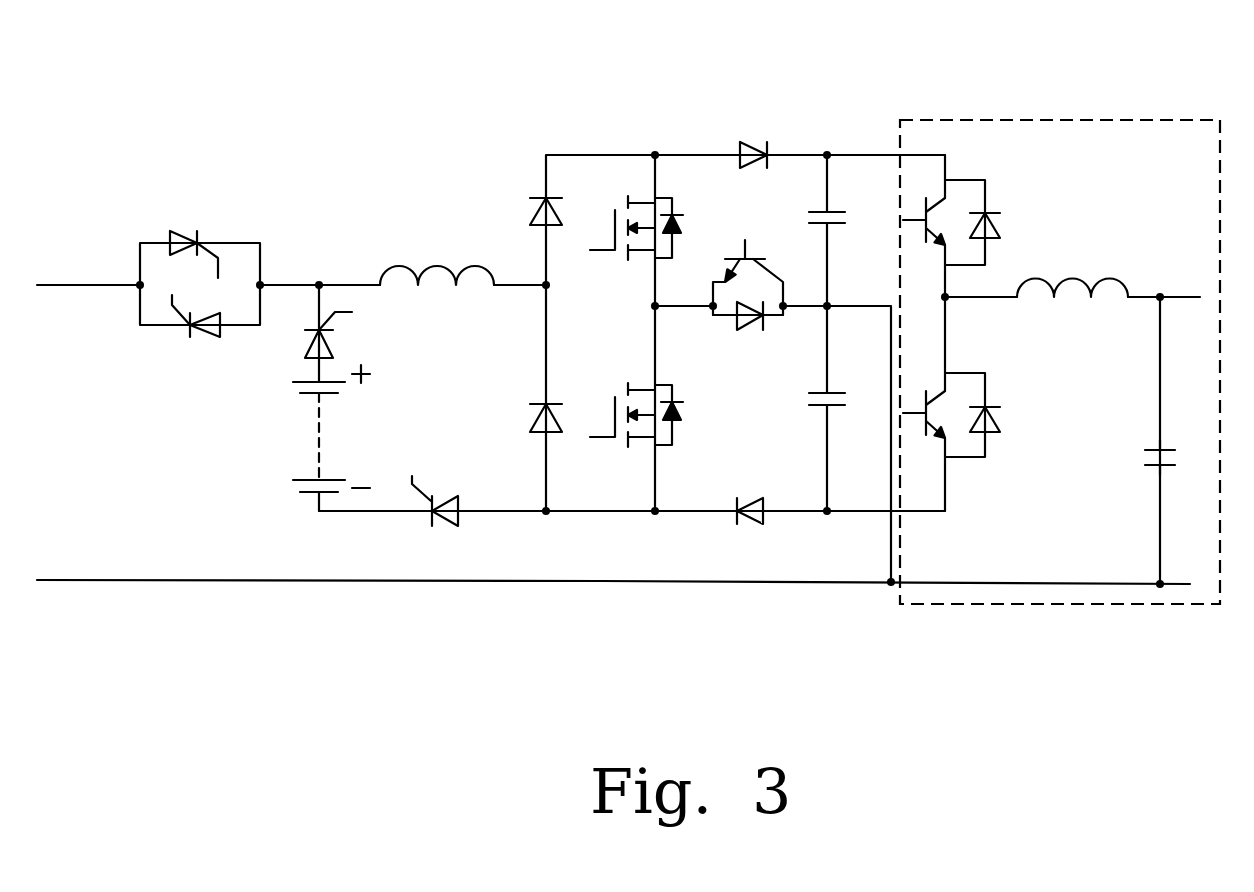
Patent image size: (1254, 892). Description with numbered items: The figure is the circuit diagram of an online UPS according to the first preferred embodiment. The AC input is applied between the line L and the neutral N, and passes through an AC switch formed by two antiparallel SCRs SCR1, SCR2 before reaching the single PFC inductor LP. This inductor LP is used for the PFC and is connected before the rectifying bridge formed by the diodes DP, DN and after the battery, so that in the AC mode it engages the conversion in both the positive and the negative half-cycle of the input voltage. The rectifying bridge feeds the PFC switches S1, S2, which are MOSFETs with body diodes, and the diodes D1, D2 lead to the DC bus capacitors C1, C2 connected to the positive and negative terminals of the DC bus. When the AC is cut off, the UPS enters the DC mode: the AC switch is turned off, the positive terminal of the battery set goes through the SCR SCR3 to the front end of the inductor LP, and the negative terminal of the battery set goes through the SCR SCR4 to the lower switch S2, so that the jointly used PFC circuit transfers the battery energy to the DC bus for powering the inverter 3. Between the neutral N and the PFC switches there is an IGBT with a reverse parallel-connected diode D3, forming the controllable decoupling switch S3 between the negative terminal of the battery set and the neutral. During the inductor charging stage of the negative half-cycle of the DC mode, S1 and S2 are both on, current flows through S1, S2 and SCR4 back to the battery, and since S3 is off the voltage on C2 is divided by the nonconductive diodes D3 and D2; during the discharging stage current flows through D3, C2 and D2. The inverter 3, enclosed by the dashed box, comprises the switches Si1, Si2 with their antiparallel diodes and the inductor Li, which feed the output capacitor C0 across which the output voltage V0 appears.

The inverter 3 is at (1028, 120).
The line input terminal L is at (88, 260).
The neutral N is at (613, 556).
The SCR of the AC switch SCR1 is at (198, 228).
The SCR of the AC switch SCR2 is at (198, 347).
The SCR SCR3 is at (361, 334).
The SCR SCR4 is at (457, 526).
The PFC inductor LP is at (437, 253).
The rectifying bridge diode DP is at (524, 211).
The rectifying bridge diode DN is at (525, 418).
The upper PFC switch S1 is at (635, 211).
The lower PFC switch S2 is at (635, 399).
The decoupling switch S3 is at (750, 261).
The diode D1 is at (750, 132).
The diode D2 is at (751, 537).
The reverse parallel-connected diode D3 is at (748, 342).
The DC bus capacitor C1 is at (844, 219).
The DC bus capacitor C2 is at (844, 408).
The inverter switch Si1 is at (974, 222).
The inverter switch Si2 is at (977, 415).
The inverter inductor Li is at (1072, 264).
The output capacitor C0 is at (1144, 433).
The output voltage V0 is at (1185, 473).